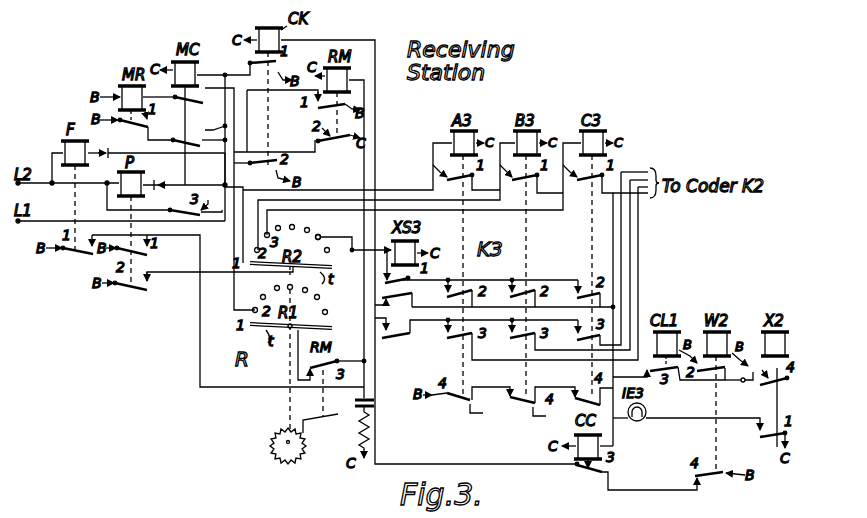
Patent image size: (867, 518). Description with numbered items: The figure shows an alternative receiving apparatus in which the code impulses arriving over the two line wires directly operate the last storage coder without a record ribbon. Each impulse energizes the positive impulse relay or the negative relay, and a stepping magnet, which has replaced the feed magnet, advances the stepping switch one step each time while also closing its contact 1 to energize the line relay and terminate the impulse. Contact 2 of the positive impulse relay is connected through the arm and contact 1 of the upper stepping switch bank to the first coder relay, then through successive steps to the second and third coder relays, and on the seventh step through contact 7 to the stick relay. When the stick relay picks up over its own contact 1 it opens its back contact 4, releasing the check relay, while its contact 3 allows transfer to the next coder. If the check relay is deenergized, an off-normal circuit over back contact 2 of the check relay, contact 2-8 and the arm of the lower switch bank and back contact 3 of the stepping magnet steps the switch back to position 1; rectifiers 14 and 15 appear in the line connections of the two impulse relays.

The contact 1 is at (205, 88).
The contact 2 is at (202, 138).
The contact 3 is at (476, 330).
The back contact 4 is at (401, 296).
The contact 7 of switch R2 7 is at (354, 232).
The contact 8 of switch R1 8 is at (319, 312).
The rectifier 14 is at (107, 150).
The rectifier 15 is at (157, 182).